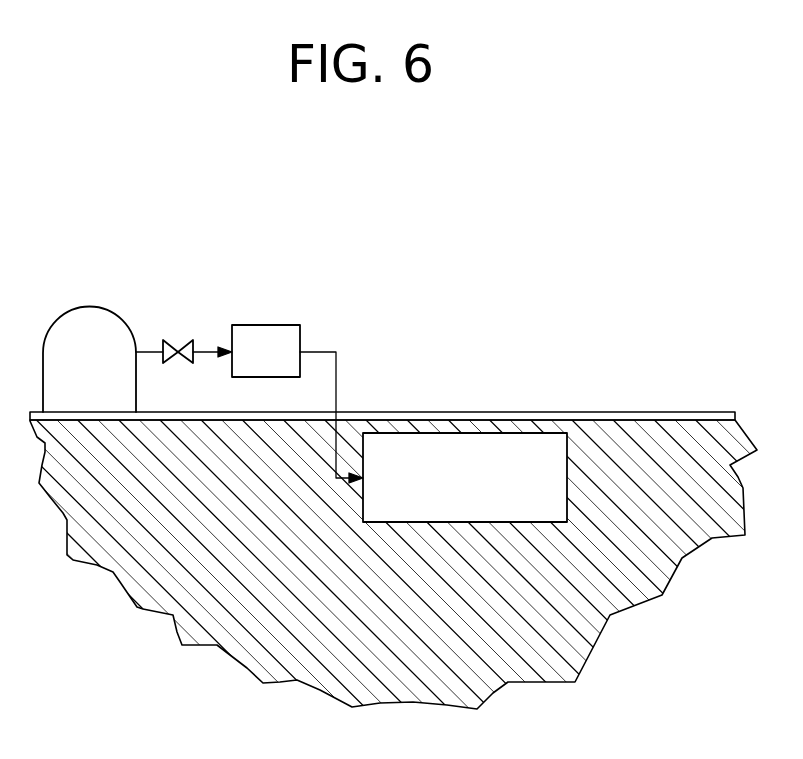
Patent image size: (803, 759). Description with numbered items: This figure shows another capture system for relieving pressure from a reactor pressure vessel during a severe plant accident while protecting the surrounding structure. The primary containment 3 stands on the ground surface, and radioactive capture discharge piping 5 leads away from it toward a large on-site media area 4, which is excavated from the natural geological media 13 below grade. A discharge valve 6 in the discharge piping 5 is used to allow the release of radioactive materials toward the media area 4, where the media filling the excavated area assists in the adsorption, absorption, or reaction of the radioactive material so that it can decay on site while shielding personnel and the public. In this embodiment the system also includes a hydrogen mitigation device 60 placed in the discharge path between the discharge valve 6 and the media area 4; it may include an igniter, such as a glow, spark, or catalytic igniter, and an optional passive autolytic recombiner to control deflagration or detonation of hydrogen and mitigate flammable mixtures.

The primary containment 3 is at (130, 323).
The discharge valve 6 is at (185, 340).
The hydrogen mitigation device 60 is at (287, 324).
The radioactive capture discharge piping 5 is at (337, 378).
The media area 4 is at (568, 469).
The natural geological media 13 is at (403, 612).